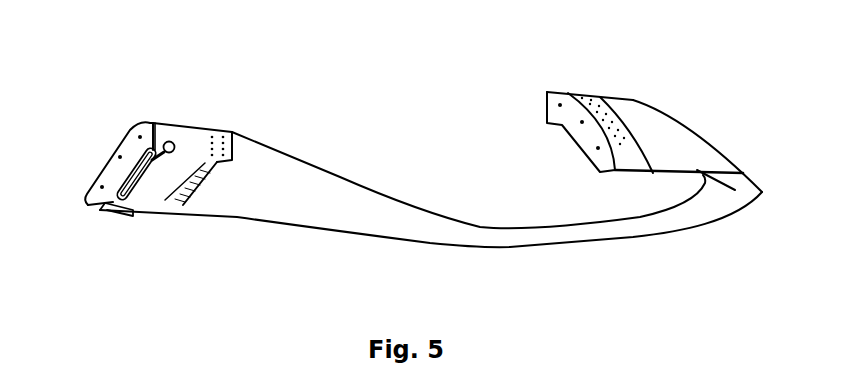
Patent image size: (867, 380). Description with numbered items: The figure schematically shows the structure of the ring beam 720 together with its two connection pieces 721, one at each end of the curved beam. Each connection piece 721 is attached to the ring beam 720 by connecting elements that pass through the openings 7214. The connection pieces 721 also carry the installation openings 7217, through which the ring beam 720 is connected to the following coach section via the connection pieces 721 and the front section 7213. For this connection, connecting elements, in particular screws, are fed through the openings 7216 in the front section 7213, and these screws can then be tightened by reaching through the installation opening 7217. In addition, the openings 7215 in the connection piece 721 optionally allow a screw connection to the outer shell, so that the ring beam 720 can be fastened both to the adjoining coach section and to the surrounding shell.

The ring beam 720 is at (353, 170).
The connection piece 721 is at (192, 140).
The front section 7213 is at (113, 177).
The opening 7214 is at (175, 207).
The opening 7215 is at (585, 94).
The opening 7216 is at (138, 135).
The installation opening 7217 is at (122, 215).